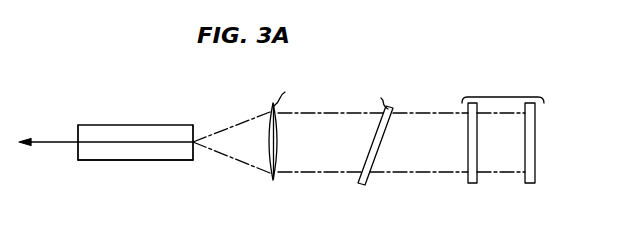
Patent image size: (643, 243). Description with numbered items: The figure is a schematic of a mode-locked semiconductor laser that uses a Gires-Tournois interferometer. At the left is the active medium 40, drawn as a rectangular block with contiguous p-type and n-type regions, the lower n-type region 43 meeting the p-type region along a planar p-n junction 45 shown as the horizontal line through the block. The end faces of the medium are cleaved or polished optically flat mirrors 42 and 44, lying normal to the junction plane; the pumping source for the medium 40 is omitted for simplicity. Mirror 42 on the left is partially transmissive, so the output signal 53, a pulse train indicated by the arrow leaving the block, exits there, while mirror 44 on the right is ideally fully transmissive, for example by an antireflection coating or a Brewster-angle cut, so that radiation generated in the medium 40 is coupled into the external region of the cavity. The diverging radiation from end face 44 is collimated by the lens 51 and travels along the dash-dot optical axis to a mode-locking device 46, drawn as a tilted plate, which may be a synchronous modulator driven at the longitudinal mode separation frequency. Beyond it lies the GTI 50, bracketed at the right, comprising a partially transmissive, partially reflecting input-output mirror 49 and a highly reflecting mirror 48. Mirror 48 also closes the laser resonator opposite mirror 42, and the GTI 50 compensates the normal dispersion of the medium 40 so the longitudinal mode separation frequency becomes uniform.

The active medium 40 is at (160, 125).
The mirror 42 is at (77, 150).
The n-type region 43 is at (98, 160).
The mirror 44 is at (194, 160).
The p-n junction 45 is at (155, 143).
The mode-locking device 46 is at (364, 181).
The mirror 48 is at (535, 142).
The input-output mirror 49 is at (467, 183).
The GTI 50 is at (503, 89).
The lens 51 is at (278, 138).
The output signal 53 is at (60, 141).